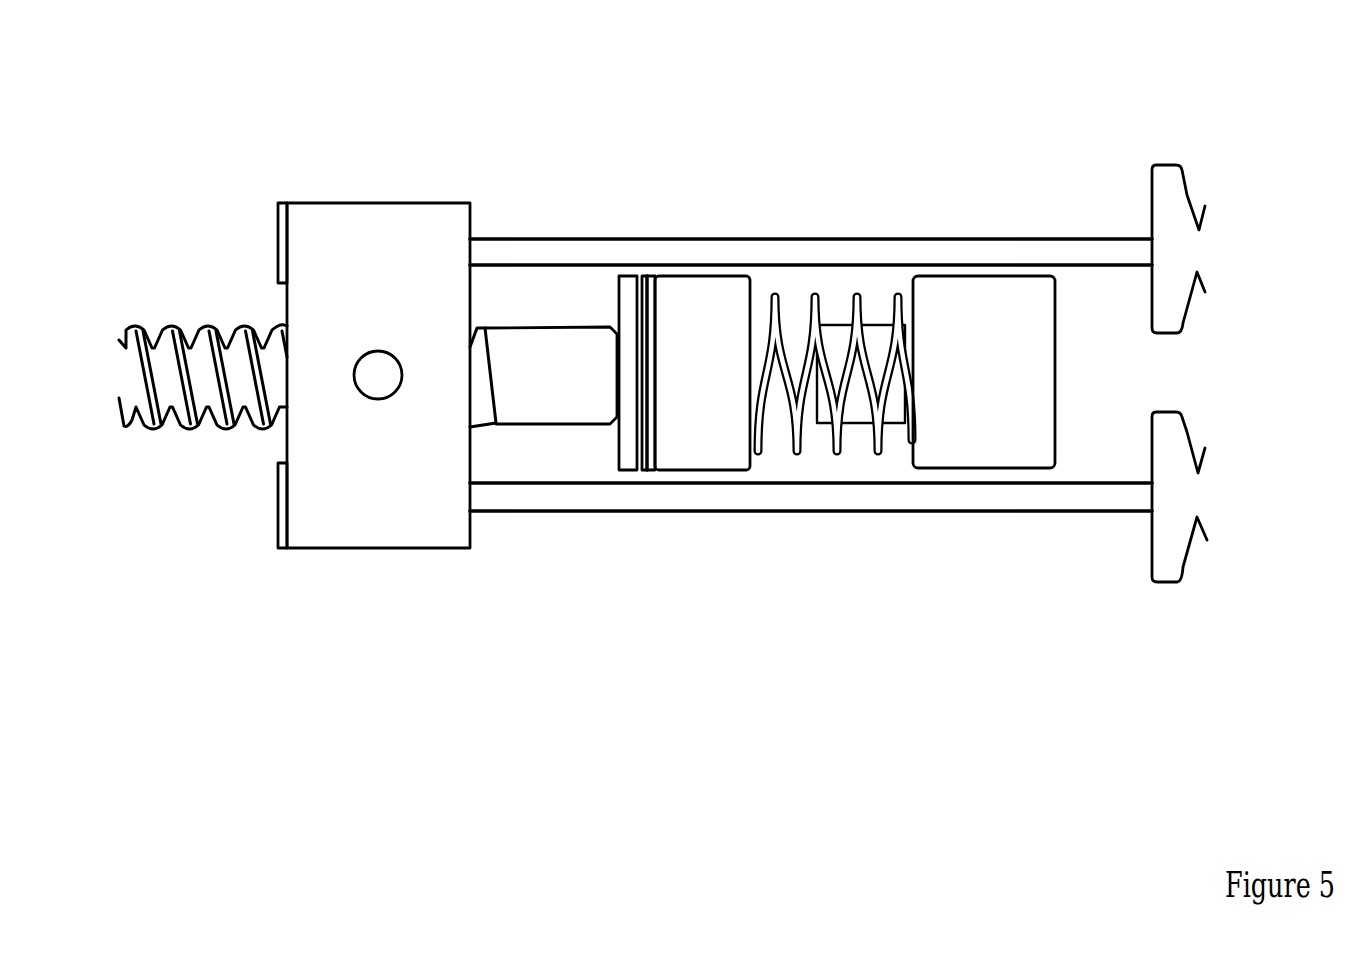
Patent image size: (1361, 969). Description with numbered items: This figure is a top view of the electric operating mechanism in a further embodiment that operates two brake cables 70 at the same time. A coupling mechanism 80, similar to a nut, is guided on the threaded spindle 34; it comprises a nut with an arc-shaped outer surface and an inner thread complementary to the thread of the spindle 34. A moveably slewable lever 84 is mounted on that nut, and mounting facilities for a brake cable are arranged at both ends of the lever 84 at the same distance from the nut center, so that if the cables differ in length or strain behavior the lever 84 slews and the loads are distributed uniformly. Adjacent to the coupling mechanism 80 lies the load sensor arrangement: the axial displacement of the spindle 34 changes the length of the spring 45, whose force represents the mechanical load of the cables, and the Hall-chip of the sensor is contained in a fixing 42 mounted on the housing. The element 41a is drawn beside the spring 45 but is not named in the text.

The spindle 34 is at (183, 347).
The coupling mechanism 80 is at (374, 371).
The lever 84 is at (374, 468).
The fixing 42 is at (706, 378).
The spring 45 is at (821, 313).
The end block 41a is at (977, 373).
The brake cables 70 is at (1085, 497).